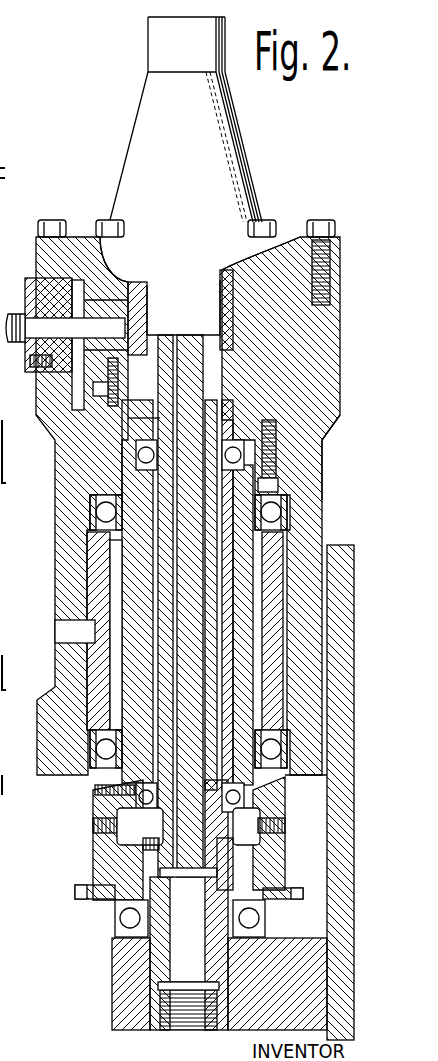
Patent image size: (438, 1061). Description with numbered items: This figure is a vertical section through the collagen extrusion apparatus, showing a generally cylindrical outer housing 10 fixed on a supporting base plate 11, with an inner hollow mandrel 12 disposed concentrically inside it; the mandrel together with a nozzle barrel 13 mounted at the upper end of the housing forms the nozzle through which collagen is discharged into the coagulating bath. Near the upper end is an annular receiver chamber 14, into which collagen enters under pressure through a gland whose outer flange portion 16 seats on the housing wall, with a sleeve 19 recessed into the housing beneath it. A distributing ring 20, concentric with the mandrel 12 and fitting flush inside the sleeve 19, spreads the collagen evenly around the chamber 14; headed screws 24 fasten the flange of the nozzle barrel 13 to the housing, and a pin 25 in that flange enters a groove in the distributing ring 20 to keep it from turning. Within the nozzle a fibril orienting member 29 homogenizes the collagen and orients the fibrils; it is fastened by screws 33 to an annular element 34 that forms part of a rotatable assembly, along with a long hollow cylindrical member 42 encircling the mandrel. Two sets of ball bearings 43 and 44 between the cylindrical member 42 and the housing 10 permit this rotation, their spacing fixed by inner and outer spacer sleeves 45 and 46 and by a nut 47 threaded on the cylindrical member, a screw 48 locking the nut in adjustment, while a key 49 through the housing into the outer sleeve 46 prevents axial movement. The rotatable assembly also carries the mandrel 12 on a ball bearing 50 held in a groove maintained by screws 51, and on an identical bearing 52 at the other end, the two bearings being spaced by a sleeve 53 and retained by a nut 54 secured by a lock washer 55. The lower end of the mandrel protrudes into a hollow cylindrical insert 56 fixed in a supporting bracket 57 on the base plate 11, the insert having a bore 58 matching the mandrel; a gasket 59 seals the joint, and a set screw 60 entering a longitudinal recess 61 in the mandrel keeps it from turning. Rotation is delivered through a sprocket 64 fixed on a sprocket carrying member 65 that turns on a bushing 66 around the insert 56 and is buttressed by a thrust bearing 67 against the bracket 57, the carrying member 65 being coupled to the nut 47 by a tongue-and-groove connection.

The outer housing 10 is at (62, 690).
The supporting base plate 11 is at (350, 534).
The inner hollow mandrel 12 is at (170, 600).
The nozzle barrel 13 is at (142, 115).
The receiver chamber 14 is at (145, 330).
The outer flange portion 16 is at (30, 282).
The sleeve 19 is at (327, 445).
The distributing ring 20 is at (322, 345).
The headed screws 24 is at (70, 210).
The pin 25 is at (118, 282).
The fibril orienting member 29 is at (138, 290).
The screws 33 is at (106, 392).
The annular element 34 is at (132, 418).
The hollow cylindrical member 42 is at (100, 475).
The ball bearings 43 is at (283, 512).
The ball bearings 44 is at (104, 745).
The inner spacer sleeve 45 is at (185, 631).
The outer spacer sleeve 46 is at (85, 570).
The nut 47 is at (280, 786).
The screw 48 is at (98, 791).
The key 49 is at (60, 633).
The ball bearing 50 is at (152, 455).
The screws 51 is at (290, 462).
The bearing 52 is at (226, 797).
The sleeve 53 is at (220, 650).
The nut 54 is at (259, 826).
The lock washer 55 is at (140, 826).
The hollow cylindrical insert 56 is at (95, 884).
The supporting bracket 57 is at (330, 962).
The bore 58 is at (140, 980).
The gasket 59 is at (233, 856).
The set screw 60 is at (150, 868).
The longitudinal recess 61 is at (162, 832).
The sprocket 64 is at (85, 900).
The sprocket carrying member 65 is at (100, 855).
The bushing 66 is at (220, 872).
The thrust bearing 67 is at (259, 918).